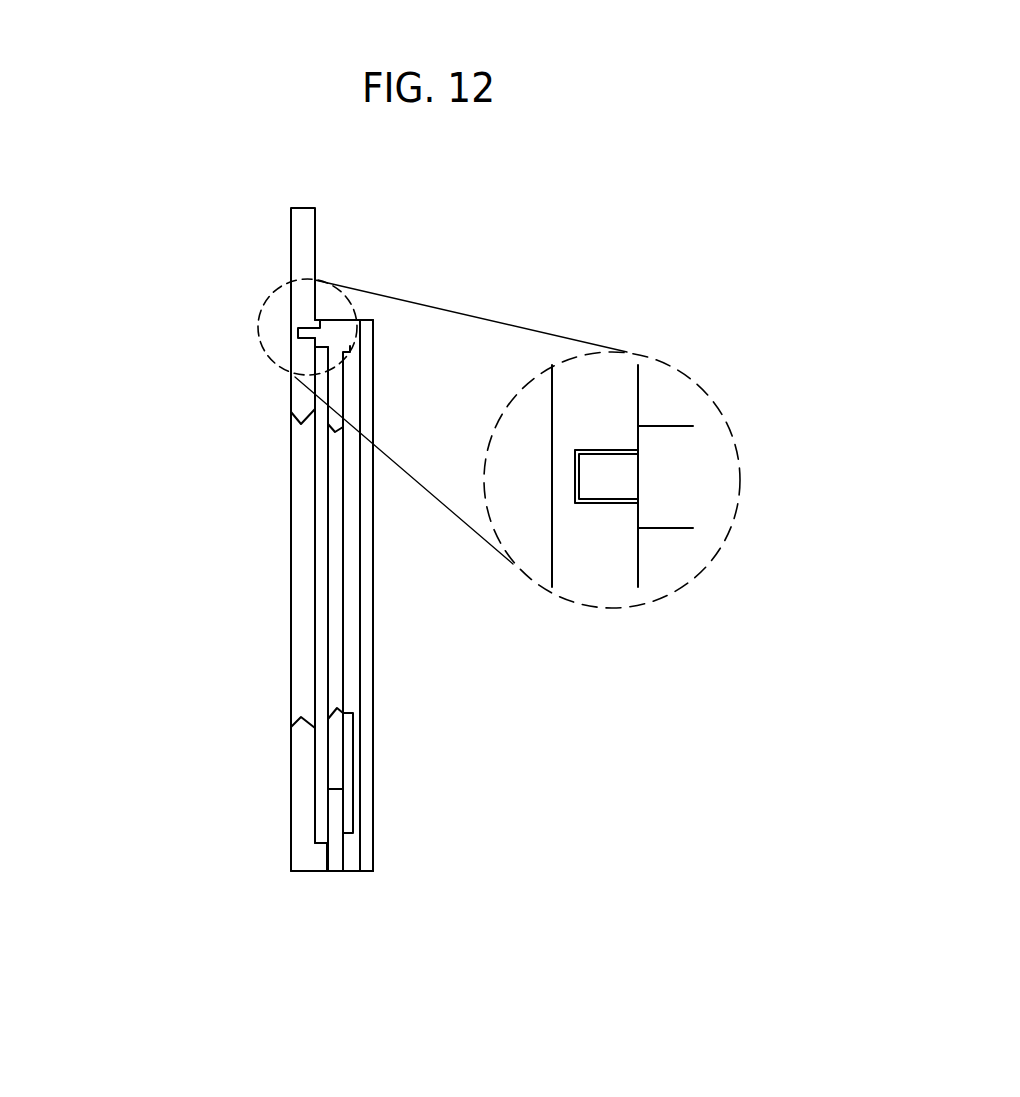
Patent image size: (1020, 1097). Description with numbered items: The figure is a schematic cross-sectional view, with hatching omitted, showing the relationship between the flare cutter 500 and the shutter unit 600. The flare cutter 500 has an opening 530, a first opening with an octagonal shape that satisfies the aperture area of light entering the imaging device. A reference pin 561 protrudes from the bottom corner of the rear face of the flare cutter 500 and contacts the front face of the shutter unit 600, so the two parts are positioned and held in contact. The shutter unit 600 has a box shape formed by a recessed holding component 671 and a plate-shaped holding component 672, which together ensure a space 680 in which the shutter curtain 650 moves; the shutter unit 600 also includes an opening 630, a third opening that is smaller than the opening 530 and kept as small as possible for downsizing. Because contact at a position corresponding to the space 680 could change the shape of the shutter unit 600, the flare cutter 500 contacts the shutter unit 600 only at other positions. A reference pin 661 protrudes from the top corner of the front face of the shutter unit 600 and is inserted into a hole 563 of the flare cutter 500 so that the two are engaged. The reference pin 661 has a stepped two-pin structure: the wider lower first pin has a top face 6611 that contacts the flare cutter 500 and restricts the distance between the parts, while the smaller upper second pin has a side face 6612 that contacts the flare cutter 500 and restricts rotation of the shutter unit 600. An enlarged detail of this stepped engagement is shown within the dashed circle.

The flare cutter 500 is at (298, 243).
The opening 530 is at (305, 543).
The reference pin 561 is at (317, 852).
The hole 563 is at (575, 450).
The shutter unit 600 is at (481, 619).
The opening 630 is at (334, 598).
The shutter curtain 650 is at (350, 783).
The reference pin 661 is at (320, 333).
The recessed holding component 671 is at (413, 889).
The plate-shaped holding component 672 is at (365, 827).
The space 680 is at (351, 678).
The top face 6611 is at (638, 437).
The side face 6612 is at (612, 503).